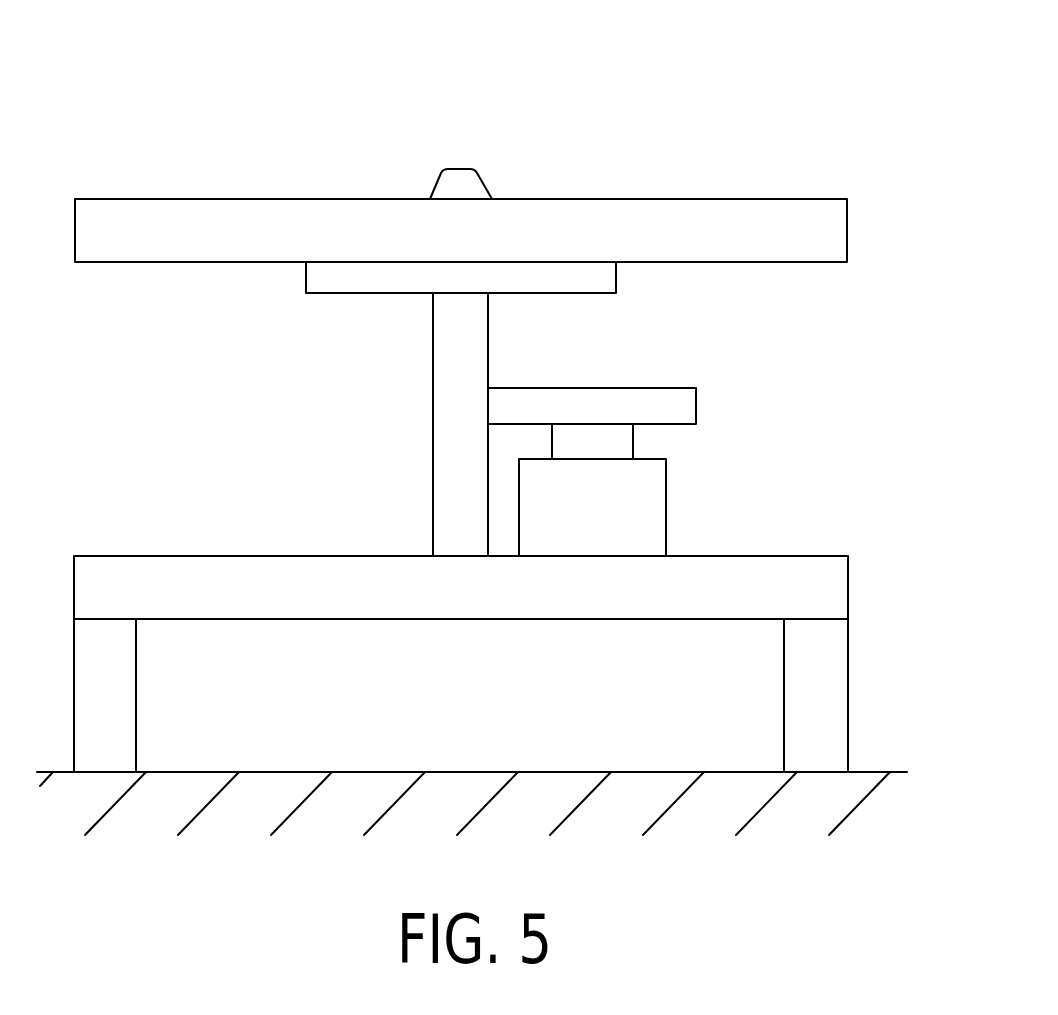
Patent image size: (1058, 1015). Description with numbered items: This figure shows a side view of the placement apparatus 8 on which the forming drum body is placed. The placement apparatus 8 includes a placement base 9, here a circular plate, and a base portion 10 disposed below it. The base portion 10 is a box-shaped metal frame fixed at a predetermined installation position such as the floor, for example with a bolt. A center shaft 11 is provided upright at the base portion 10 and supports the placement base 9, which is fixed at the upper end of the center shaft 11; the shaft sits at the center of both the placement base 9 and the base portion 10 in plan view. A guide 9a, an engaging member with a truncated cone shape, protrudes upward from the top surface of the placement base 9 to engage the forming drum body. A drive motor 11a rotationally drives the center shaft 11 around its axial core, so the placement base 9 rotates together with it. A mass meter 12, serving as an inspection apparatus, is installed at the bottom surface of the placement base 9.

The placement apparatus 8 is at (698, 145).
The placement base 9 is at (620, 205).
The guide 9a is at (482, 180).
The base portion 10 is at (838, 684).
The center shaft 11 is at (444, 435).
The drive motor 11a is at (657, 488).
The mass meter 12 is at (327, 283).